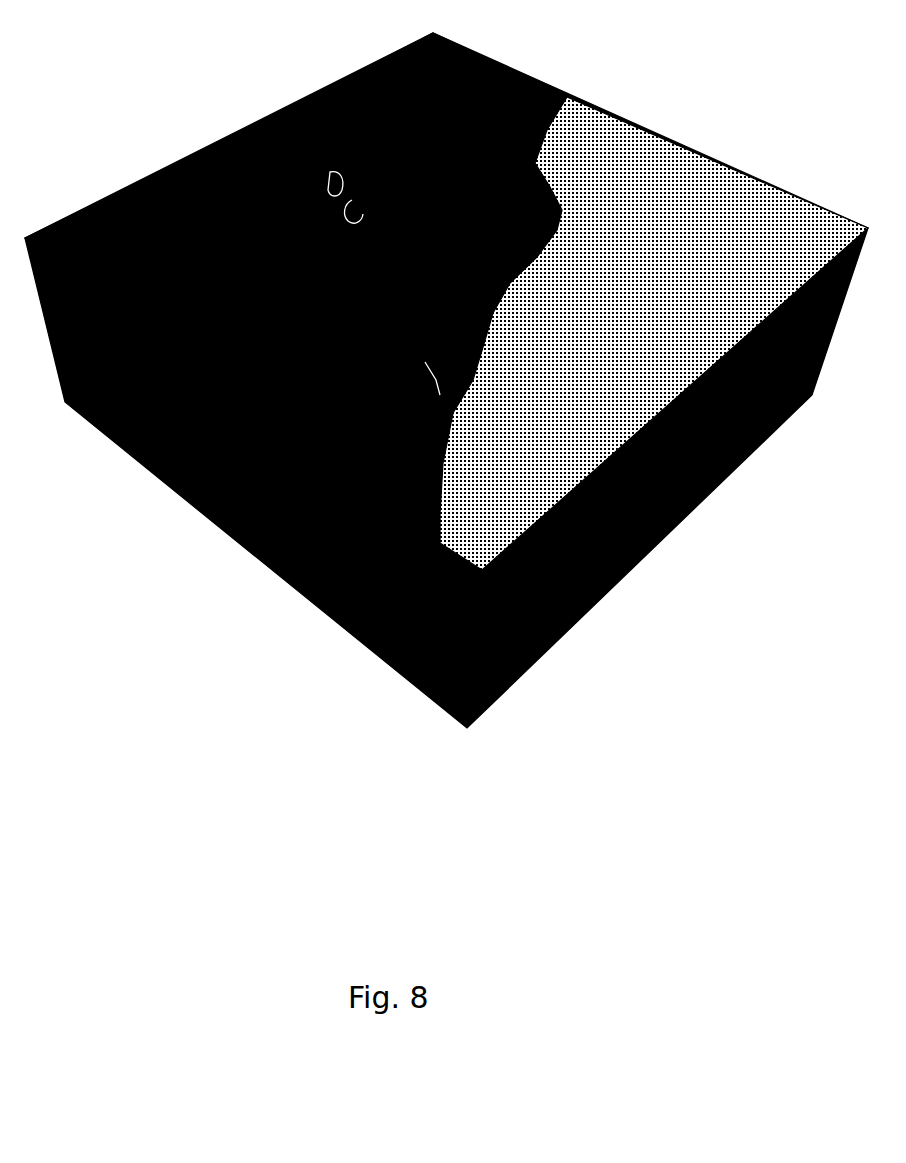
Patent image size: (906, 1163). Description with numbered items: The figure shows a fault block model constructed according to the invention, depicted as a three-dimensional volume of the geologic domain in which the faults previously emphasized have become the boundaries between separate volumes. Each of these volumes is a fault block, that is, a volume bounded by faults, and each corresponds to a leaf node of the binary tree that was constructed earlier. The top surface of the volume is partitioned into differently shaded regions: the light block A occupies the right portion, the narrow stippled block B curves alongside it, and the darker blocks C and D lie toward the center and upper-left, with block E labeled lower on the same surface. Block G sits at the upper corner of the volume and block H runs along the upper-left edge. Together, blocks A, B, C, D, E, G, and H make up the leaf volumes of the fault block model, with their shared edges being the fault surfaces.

The fault block A is at (654, 289).
The fault block B is at (525, 228).
The fault block C is at (353, 213).
The fault block D is at (333, 186).
The fault block E is at (425, 377).
The fault block G is at (360, 66).
The fault block H is at (180, 152).